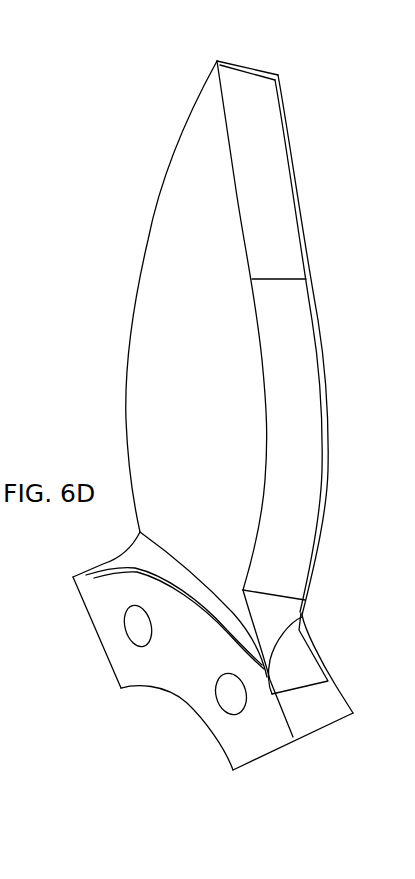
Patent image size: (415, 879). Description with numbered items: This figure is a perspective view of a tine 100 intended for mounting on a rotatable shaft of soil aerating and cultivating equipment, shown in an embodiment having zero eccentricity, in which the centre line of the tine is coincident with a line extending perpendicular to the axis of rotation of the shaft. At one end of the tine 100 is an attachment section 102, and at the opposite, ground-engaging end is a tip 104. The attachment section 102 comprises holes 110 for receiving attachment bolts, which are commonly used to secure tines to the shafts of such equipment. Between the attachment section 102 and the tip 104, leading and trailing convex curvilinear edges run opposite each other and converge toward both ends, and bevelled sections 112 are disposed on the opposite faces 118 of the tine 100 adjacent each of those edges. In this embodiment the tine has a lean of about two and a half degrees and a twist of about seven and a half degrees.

The tine 100 is at (140, 128).
The attachment section 102 is at (270, 738).
The tip 104 is at (261, 67).
The holes 110 is at (127, 625).
The bevelled sections 112 is at (300, 392).
The faces 118 is at (196, 362).